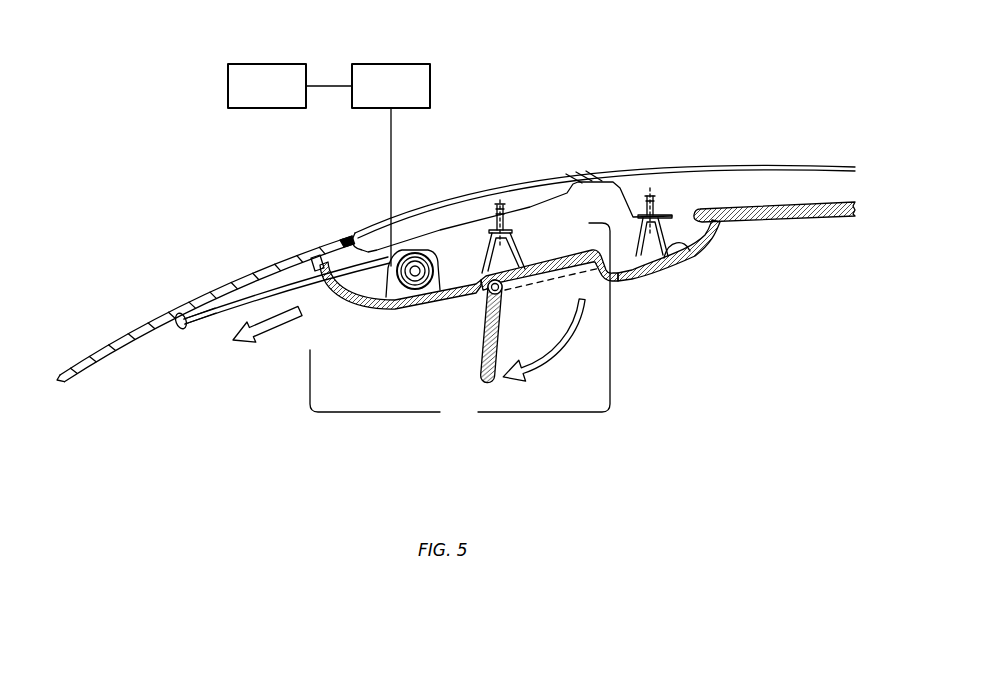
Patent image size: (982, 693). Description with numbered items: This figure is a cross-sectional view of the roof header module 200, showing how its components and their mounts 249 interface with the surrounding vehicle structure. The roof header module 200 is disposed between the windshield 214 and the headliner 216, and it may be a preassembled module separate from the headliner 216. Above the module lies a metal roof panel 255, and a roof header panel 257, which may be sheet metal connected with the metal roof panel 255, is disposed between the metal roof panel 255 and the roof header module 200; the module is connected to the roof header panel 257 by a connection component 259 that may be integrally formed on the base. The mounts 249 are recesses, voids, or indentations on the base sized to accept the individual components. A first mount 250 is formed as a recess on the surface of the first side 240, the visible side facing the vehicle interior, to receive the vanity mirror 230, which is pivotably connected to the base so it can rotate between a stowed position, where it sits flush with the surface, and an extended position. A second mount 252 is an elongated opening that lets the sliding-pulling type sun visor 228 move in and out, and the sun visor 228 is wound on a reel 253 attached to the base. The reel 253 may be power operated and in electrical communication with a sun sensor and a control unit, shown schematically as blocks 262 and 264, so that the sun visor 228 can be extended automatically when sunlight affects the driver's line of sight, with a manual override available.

The roof header module 200 is at (406, 303).
The windshield 214 is at (147, 315).
The headliner 216 is at (793, 212).
The sun visor 228 is at (213, 322).
The vanity mirror 230 is at (480, 373).
The first side 240 is at (662, 260).
The mounts 249 is at (460, 323).
The first mount 250 is at (565, 257).
The second mount 252 is at (322, 277).
The reel 253 is at (390, 316).
The metal roof panel 255 is at (477, 195).
The roof header panel 257 is at (530, 207).
The connection component 259 is at (497, 250).
The controller 262 is at (290, 86).
The sensor 264 is at (391, 165).